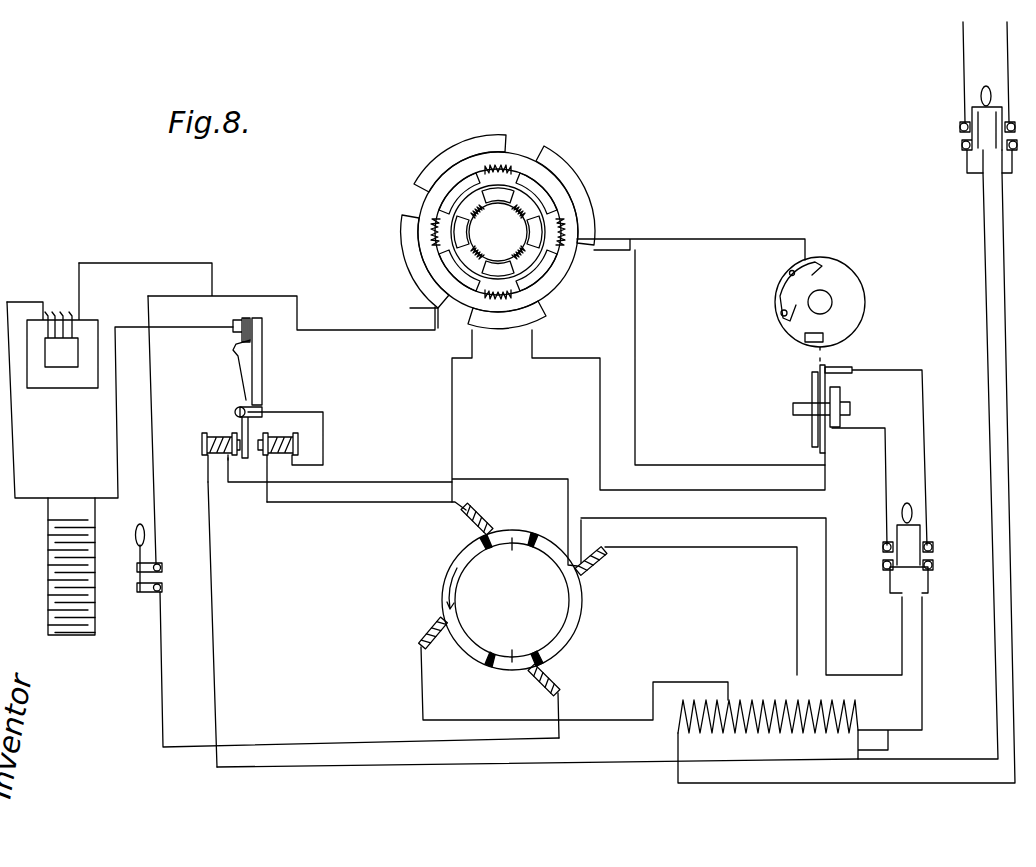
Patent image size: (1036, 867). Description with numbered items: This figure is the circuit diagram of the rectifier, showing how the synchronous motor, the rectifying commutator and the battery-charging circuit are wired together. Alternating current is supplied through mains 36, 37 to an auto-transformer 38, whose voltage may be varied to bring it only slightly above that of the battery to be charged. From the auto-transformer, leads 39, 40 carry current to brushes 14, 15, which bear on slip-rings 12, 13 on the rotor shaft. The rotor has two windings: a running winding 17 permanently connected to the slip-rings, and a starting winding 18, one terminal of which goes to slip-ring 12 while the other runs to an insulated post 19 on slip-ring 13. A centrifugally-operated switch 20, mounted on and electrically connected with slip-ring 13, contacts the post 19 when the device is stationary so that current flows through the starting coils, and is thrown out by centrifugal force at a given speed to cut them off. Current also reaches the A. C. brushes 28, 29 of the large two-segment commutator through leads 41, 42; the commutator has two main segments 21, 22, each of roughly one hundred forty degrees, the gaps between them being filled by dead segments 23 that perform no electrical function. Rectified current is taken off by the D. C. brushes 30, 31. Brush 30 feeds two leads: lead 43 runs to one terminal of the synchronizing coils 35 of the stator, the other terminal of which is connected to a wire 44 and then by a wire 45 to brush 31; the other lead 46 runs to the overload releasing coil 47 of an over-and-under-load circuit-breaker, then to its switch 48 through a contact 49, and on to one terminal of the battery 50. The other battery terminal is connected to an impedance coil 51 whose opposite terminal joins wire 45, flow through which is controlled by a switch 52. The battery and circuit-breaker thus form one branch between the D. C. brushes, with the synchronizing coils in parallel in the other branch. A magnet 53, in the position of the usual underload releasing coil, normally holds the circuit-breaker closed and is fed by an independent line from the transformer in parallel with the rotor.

The slip-ring 12 is at (840, 385).
The slip-ring 13 is at (855, 297).
The brush 14 is at (850, 428).
The brush 15 is at (850, 368).
The running winding 17 is at (537, 235).
The starting winding 18 is at (495, 152).
The insulated post 19 is at (810, 268).
The centrifugally-operated switch 20 is at (782, 293).
The main commutator segment 21 is at (442, 586).
The main commutator segment 22 is at (578, 614).
The dead segments 23 is at (511, 600).
The A. C. brush 28 is at (598, 578).
The A. C. brush 29 is at (425, 639).
The D. C. brush 30 is at (484, 521).
The D. C. brush 31 is at (549, 683).
The synchronizing coils 35 is at (447, 158).
The main 36 is at (678, 777).
The main 37 is at (858, 762).
The auto-transformer 38 is at (760, 700).
The lead 39 is at (850, 677).
The lead 40 is at (907, 702).
The lead 41 is at (470, 710).
The lead 42 is at (797, 627).
The lead 43 is at (453, 408).
The wire 44 is at (373, 336).
The wire 45 is at (152, 396).
The lead 46 is at (365, 503).
The overload releasing coil 47 is at (285, 422).
The switch 48 is at (240, 370).
The contact 49 is at (243, 318).
The battery 50 is at (72, 520).
The impedance coil 51 is at (52, 325).
The switch 52 is at (137, 580).
The magnet 53 is at (219, 448).